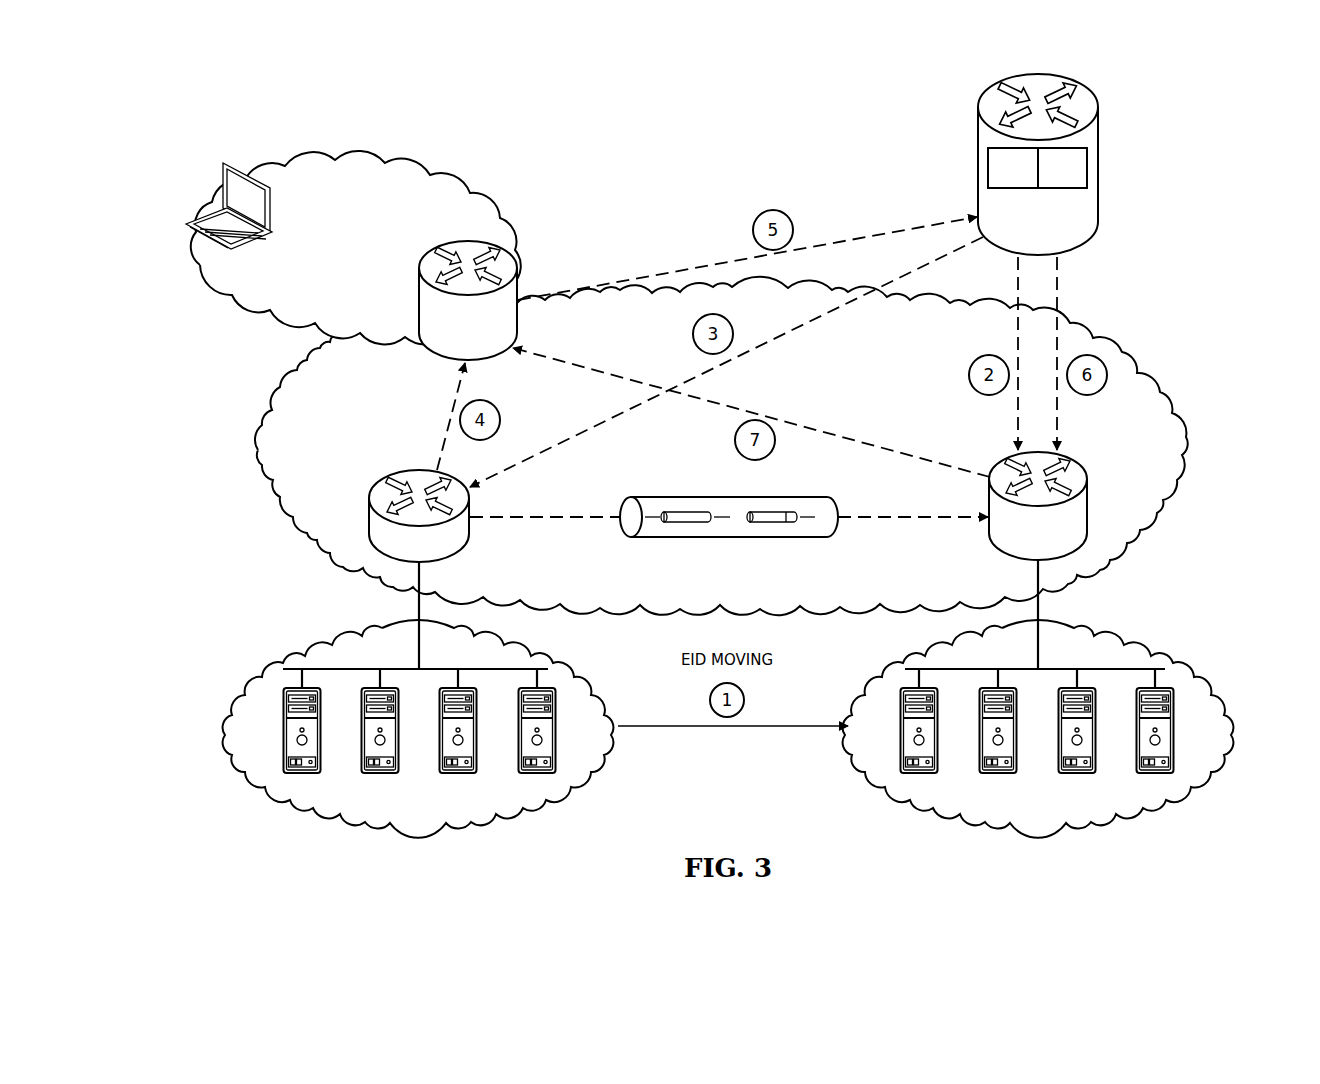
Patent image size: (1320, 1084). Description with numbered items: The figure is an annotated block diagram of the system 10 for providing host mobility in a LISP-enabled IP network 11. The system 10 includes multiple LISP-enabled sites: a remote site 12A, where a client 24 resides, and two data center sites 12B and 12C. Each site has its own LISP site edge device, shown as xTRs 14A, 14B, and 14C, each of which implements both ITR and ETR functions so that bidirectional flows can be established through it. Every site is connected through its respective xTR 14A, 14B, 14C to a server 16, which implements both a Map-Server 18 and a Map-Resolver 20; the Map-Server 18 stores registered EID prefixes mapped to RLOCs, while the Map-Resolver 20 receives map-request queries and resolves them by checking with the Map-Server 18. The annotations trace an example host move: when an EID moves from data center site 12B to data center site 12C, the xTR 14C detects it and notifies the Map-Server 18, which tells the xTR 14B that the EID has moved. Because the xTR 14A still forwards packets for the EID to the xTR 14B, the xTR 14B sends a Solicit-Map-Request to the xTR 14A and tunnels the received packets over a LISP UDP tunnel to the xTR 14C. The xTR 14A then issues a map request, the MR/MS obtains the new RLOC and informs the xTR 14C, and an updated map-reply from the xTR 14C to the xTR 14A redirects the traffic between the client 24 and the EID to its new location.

The system 10 is at (869, 138).
The LISP-enabled IP network 11 is at (875, 414).
The remote LISP-enabled site 12A is at (332, 274).
The data center site 12B is at (397, 812).
The data center site 12C is at (1017, 812).
The xTR 14A is at (450, 357).
The xTR 14B is at (412, 471).
The xTR 14C is at (1090, 503).
The server 16 is at (1066, 164).
The Map-Server 18 is at (1060, 190).
The Map-Resolver 20 is at (1013, 190).
The client 24 is at (210, 211).